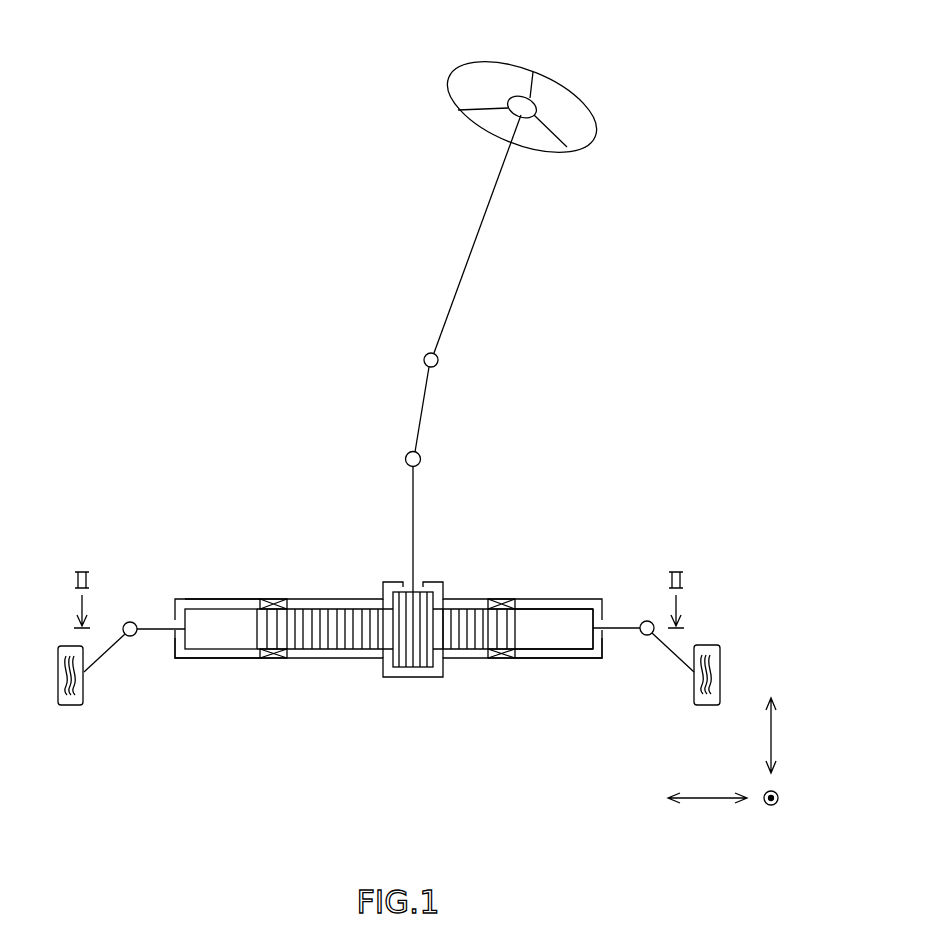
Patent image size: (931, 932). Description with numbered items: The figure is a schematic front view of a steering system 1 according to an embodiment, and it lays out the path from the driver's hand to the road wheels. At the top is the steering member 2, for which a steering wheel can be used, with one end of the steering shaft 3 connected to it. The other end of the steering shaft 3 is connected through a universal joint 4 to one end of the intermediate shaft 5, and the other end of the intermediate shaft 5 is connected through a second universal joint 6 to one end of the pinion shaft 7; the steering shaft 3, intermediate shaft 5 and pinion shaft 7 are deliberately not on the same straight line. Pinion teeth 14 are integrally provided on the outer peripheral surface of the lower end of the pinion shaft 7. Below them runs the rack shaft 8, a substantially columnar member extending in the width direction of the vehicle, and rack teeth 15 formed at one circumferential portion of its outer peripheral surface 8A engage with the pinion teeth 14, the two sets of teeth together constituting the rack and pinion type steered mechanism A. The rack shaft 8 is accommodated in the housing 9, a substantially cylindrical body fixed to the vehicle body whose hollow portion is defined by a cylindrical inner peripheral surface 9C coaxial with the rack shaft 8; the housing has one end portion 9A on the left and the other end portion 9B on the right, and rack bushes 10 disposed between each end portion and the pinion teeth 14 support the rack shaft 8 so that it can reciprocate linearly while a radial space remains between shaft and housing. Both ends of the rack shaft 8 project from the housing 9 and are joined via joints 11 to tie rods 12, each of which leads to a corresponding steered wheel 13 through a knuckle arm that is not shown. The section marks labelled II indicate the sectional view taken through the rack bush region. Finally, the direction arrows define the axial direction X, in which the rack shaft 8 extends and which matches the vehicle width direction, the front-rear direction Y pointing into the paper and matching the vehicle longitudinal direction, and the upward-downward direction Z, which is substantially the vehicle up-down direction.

The steering system 1 is at (613, 60).
The steering member 2 is at (514, 63).
The steering shaft 3 is at (474, 232).
The universal joint 4 is at (438, 361).
The intermediate shaft 5 is at (419, 422).
The universal joint 6 is at (421, 457).
The pinion shaft 7 is at (416, 522).
The rack shaft 8 is at (389, 661).
The outer peripheral surface 8A is at (532, 640).
The housing 9 is at (387, 632).
The one end portion 9A is at (178, 660).
The other end portion 9B is at (598, 660).
The inner peripheral surface 9C is at (240, 601).
The rack bush 10 is at (272, 600).
The joint 11 is at (132, 621).
The tie rod 12 is at (112, 657).
The steered wheel 13 is at (70, 707).
The pinion teeth 14 is at (423, 668).
The rack teeth 15 is at (363, 642).
The rack and pinion type steered mechanism A is at (450, 678).
The section line II is at (379, 600).
The axial direction X is at (707, 801).
The front-rear direction Y is at (771, 806).
The upward-downward direction Z is at (768, 735).